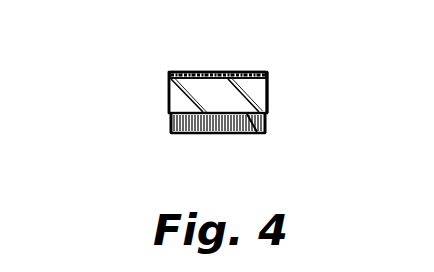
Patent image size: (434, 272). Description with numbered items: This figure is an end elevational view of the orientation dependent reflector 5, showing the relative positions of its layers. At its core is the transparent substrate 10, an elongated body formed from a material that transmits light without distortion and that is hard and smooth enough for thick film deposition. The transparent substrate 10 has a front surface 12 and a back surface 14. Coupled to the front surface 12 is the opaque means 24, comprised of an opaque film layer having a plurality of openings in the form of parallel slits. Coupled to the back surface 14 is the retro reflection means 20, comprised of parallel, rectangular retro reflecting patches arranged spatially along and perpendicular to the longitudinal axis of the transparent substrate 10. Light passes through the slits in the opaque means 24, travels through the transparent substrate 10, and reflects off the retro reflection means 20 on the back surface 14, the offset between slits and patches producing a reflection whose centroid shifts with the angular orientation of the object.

The orientation dependent reflector 5 is at (298, 85).
The transparent substrate 10 is at (168, 102).
The front surface 12 is at (250, 72).
The back surface 14 is at (250, 118).
The retro reflection means 20 is at (217, 134).
The opaque means 24 is at (220, 72).